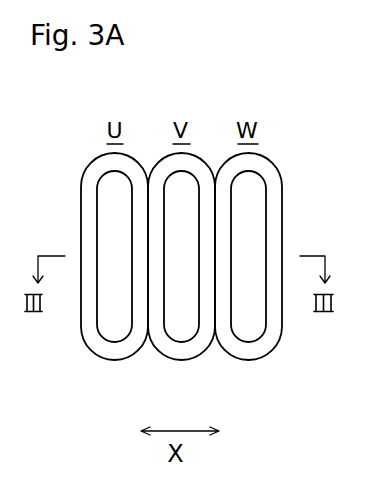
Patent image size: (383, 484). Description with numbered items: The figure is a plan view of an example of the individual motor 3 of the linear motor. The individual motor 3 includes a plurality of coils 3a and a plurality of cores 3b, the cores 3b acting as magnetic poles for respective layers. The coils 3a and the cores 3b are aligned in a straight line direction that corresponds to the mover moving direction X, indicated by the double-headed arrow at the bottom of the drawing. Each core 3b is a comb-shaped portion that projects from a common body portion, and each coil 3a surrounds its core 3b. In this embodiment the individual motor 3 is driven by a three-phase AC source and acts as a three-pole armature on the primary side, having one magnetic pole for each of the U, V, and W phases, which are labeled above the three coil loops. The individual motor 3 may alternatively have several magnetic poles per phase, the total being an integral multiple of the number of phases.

The individual motor 3 is at (212, 132).
The coil 3a is at (87, 320).
The core 3b is at (112, 320).